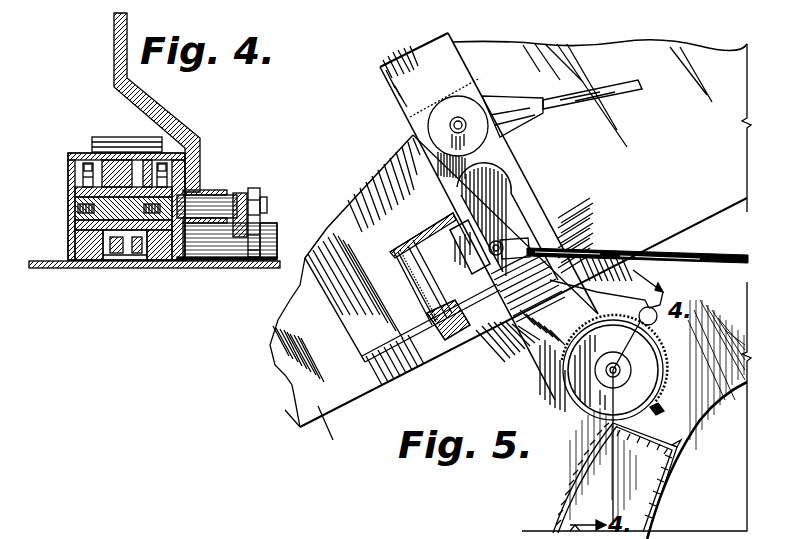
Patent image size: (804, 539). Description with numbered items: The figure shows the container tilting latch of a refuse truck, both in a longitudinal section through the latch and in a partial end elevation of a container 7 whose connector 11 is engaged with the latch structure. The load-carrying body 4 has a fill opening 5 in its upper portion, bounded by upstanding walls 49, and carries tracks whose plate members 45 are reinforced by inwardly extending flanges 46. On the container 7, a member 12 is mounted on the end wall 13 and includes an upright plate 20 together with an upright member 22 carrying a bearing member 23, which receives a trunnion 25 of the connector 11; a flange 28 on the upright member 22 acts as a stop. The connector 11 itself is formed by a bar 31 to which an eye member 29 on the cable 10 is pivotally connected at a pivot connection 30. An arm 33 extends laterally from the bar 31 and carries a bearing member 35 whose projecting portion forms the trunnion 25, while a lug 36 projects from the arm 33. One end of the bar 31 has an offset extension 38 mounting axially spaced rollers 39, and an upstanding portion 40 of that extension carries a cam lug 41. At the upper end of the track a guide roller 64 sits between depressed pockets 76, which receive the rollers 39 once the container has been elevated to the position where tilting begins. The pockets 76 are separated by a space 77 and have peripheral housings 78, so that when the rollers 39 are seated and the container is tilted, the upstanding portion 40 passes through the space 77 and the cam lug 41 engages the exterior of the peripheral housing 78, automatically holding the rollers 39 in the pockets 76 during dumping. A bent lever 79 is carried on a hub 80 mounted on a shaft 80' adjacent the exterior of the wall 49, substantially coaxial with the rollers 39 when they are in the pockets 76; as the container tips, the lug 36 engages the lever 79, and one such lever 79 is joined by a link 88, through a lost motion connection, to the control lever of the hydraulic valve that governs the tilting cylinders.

In FIG. 4, the load-carrying body 4 is at (270, 237).
In FIG. 5, the load-carrying body 4 is at (735, 392).
In FIG. 5, the fill opening 5 is at (703, 398).
In FIG. 5, the container 7 is at (320, 415).
In FIG. 5, the cable 10 is at (633, 80).
In FIG. 5, the connector 11 is at (503, 158).
In FIG. 5, the member 12 is at (320, 268).
In FIG. 5, the end wall 13 is at (410, 360).
In FIG. 5, the upright plate 20 is at (350, 206).
In FIG. 5, the upright member 22 is at (400, 333).
In FIG. 5, the bearing member 23 is at (460, 318).
In FIG. 5, the trunnion 25 is at (407, 265).
In FIG. 5, the flange 28 is at (453, 213).
In FIG. 5, the eye member 29 is at (517, 108).
In FIG. 5, the pivot connection 30 is at (462, 118).
In FIG. 5, the bar 31 is at (402, 83).
In FIG. 5, the arm 33 is at (540, 223).
In FIG. 5, the bearing member 35 is at (390, 252).
In FIG. 5, the lug 36 is at (470, 250).
In FIG. 5, the offset extension 38 is at (615, 285).
In FIG. 4, the roller 39 is at (165, 261).
In FIG. 5, the roller 39 is at (600, 405).
In FIG. 4, the upstanding portion 40 is at (138, 165).
In FIG. 5, the upstanding portion 40 is at (668, 300).
In FIG. 4, the cam lug 41 is at (122, 160).
In FIG. 5, the cam lug 41 is at (658, 318).
In FIG. 5, the plate member 45 is at (577, 493).
In FIG. 5, the inwardly extending flange 46 is at (603, 470).
In FIG. 5, the upstanding wall 49 is at (740, 312).
In FIG. 4, the guide roller 64 is at (135, 261).
In FIG. 4, the pocket 76 is at (90, 261).
In FIG. 5, the pocket 76 is at (673, 443).
In FIG. 4, the space 77 is at (113, 165).
In FIG. 4, the peripheral housing 78 is at (68, 155).
In FIG. 5, the peripheral housing 78 is at (663, 360).
In FIG. 4, the lever 79 is at (114, 60).
In FIG. 5, the lever 79 is at (510, 220).
In FIG. 4, the hub 80 is at (219, 202).
In FIG. 4, the shaft 80' is at (282, 215).
In FIG. 5, the link 88 is at (687, 253).